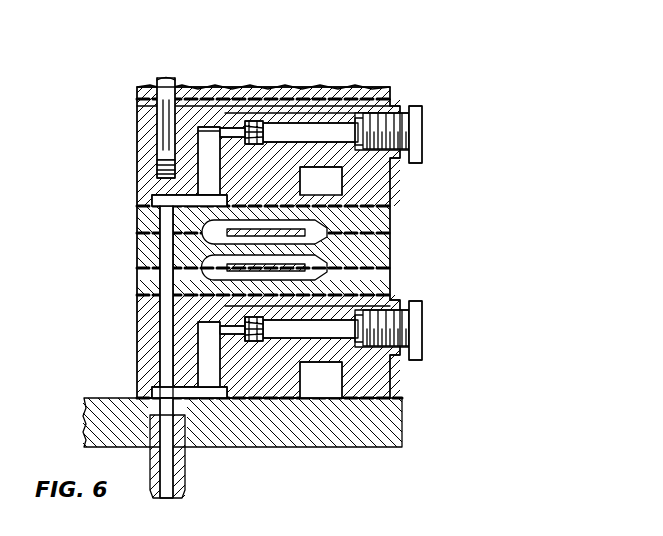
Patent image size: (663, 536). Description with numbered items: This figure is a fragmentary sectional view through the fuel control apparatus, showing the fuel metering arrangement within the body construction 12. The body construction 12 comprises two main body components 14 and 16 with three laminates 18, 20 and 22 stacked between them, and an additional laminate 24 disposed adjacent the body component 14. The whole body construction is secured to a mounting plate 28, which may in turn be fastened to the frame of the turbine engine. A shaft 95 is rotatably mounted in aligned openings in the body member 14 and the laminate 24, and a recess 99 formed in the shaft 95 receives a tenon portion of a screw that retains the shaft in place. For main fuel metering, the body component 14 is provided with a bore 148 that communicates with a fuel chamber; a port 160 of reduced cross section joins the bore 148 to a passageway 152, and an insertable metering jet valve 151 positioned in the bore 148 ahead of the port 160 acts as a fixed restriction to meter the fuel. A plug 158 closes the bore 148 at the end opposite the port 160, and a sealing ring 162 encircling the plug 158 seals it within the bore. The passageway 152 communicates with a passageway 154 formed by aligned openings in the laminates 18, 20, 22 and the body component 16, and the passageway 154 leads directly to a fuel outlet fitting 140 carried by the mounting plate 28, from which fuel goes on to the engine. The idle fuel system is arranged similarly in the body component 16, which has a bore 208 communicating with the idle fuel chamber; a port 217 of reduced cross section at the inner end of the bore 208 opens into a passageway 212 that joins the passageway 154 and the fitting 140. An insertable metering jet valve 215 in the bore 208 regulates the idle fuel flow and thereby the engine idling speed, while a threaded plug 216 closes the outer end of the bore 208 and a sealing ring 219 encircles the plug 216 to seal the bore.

The body construction 12 is at (137, 191).
The main body component 14 is at (138, 125).
The main body component 16 is at (140, 305).
The laminate 18 is at (140, 218).
The laminate 20 is at (140, 246).
The laminate 22 is at (140, 276).
The laminate 24 is at (138, 90).
The mounting plate 28 is at (402, 415).
The shaft 95 is at (160, 115).
The recess 99 is at (158, 166).
The fuel outlet fitting 140 is at (181, 465).
The bore 148 is at (272, 132).
The metering jet valve 151 is at (257, 120).
The passageway 152 is at (214, 128).
The passageway 154 is at (166, 332).
The plug 158 is at (422, 133).
The port 160 is at (254, 122).
The sealing ring 162 is at (368, 113).
The bore 208 is at (265, 340).
The passageway 212 is at (207, 335).
The metering jet valve 215 is at (252, 345).
The threaded plug 216 is at (422, 318).
The port 217 is at (245, 340).
The sealing ring 219 is at (392, 308).